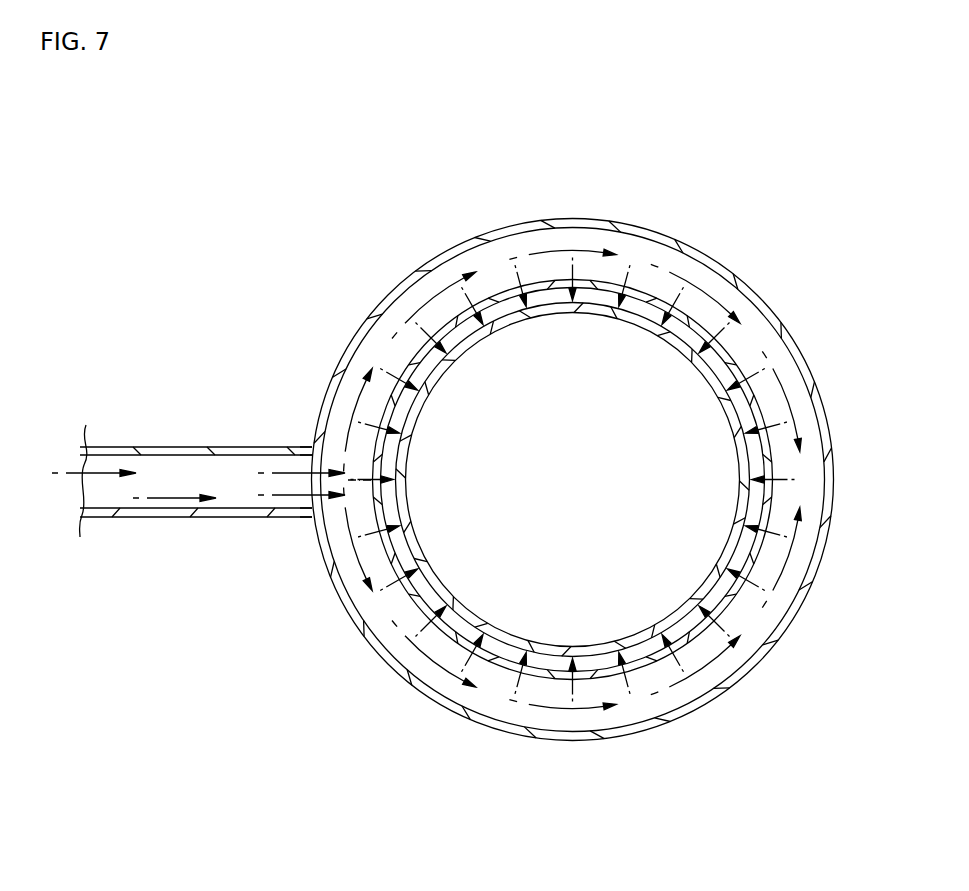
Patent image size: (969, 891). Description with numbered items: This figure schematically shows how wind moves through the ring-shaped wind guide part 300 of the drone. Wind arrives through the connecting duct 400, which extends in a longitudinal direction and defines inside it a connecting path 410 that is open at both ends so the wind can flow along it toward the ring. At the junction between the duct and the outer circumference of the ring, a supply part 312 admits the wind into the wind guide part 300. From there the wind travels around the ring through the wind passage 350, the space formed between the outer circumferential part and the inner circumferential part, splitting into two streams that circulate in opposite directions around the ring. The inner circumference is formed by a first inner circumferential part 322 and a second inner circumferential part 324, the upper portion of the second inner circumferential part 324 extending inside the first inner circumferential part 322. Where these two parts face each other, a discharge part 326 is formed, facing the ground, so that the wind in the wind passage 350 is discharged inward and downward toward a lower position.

The wind guide part 300 is at (573, 201).
The supply part 312 is at (311, 500).
The first inner circumferential part 322 is at (683, 358).
The second inner circumferential part 324 is at (737, 448).
The discharge part 326 is at (499, 316).
The wind passage 350 is at (398, 633).
The connecting duct 400 is at (235, 444).
The connecting path 410 is at (194, 473).